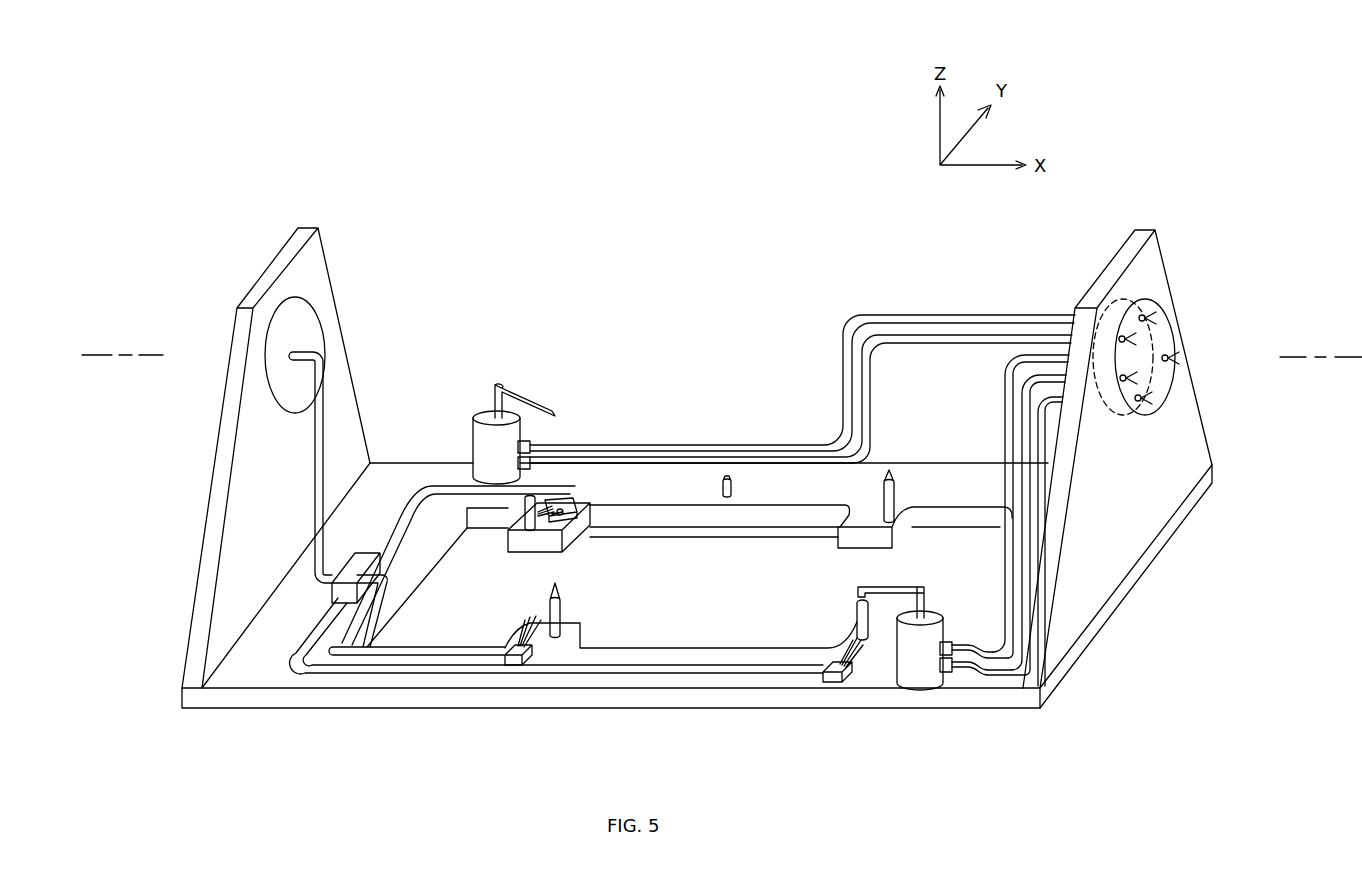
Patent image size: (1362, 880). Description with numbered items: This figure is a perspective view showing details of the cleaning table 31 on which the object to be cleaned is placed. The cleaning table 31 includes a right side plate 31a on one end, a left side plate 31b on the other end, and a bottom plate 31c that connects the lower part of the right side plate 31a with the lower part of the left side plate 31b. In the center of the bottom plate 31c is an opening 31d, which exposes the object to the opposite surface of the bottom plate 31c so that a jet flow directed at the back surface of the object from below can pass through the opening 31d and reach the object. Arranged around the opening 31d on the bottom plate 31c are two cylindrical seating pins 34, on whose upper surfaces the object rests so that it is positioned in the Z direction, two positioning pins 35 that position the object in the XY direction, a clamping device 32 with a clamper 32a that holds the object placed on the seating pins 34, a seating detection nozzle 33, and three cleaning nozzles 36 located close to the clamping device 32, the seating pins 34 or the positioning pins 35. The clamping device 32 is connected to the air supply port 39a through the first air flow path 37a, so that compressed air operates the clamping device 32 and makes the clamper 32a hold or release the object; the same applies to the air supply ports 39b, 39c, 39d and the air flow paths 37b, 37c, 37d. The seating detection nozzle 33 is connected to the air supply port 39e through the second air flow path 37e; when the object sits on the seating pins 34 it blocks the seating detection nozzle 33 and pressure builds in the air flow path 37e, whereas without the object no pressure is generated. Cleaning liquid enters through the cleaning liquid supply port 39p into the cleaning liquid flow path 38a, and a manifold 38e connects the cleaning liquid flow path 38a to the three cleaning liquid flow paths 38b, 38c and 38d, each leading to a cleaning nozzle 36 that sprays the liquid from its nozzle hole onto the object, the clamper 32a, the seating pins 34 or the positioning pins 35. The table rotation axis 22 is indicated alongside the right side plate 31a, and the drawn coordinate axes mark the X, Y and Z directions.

The table rotation axis 22 is at (1318, 357).
The cleaning table 31 is at (659, 313).
The right side plate 31a is at (1130, 268).
The left side plate 31b is at (264, 275).
The bottom plate 31c is at (725, 702).
The opening 31d is at (635, 650).
The clamping device 32 is at (473, 432).
The clamper 32a is at (533, 392).
The seating detection nozzle 33 is at (728, 478).
The seating pin 34 is at (522, 532).
The positioning pin 35 is at (890, 470).
The cleaning nozzle 36 is at (575, 497).
The air flow path 37a is at (1060, 395).
The air flow path 37b is at (1044, 375).
The air flow path 37c is at (893, 338).
The air flow path 37d is at (937, 318).
The air flow path 37e is at (1018, 357).
The cleaning liquid flow path 38a is at (315, 511).
The cleaning liquid flow path 38b is at (303, 677).
The cleaning liquid flow path 38c is at (358, 657).
The cleaning liquid flow path 38d is at (407, 513).
The manifold 38e is at (340, 601).
The air supply port 39a is at (1146, 398).
The air supply port 39b is at (1131, 378).
The air supply port 39c is at (1130, 339).
The air supply port 39d is at (1150, 318).
The air supply port 39e is at (1173, 358).
The cleaning liquid supply port 39p is at (293, 355).